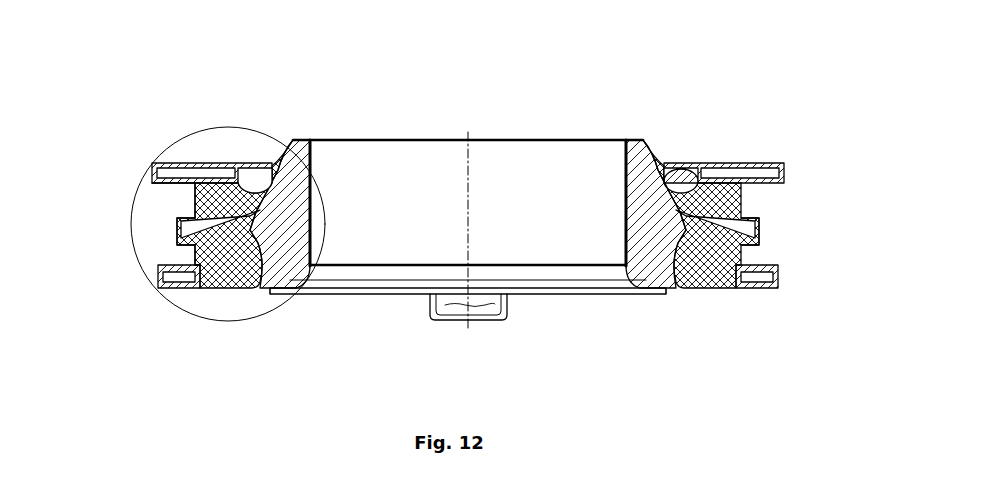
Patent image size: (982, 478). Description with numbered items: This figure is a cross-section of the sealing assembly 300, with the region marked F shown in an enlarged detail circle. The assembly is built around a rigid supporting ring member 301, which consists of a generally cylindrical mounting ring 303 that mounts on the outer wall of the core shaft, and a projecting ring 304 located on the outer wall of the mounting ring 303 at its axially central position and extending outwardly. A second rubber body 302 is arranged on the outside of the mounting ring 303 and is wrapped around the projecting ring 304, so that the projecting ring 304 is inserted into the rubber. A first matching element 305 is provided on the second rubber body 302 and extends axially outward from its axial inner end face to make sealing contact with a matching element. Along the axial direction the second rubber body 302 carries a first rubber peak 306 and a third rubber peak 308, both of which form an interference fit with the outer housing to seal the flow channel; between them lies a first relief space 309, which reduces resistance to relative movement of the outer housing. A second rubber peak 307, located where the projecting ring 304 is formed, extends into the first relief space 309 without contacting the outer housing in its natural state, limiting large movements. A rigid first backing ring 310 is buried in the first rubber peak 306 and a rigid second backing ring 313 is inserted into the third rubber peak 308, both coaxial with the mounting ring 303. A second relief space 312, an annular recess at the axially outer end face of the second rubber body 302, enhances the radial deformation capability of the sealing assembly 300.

The sealing assembly 300 is at (489, 122).
The supporting ring member 301 is at (267, 163).
The second rubber body 302 is at (193, 205).
The mounting ring 303 is at (288, 229).
The projecting ring 304 is at (222, 188).
The first matching element 305 is at (500, 323).
The first rubber peak 306 is at (778, 283).
The second rubber peak 307 is at (760, 231).
The third rubber peak 308 is at (790, 167).
The first relief space 309 is at (175, 248).
The first backing ring 310 is at (177, 268).
The second relief space 312 is at (668, 160).
The second backing ring 313 is at (180, 172).
The seal detail F is at (205, 304).